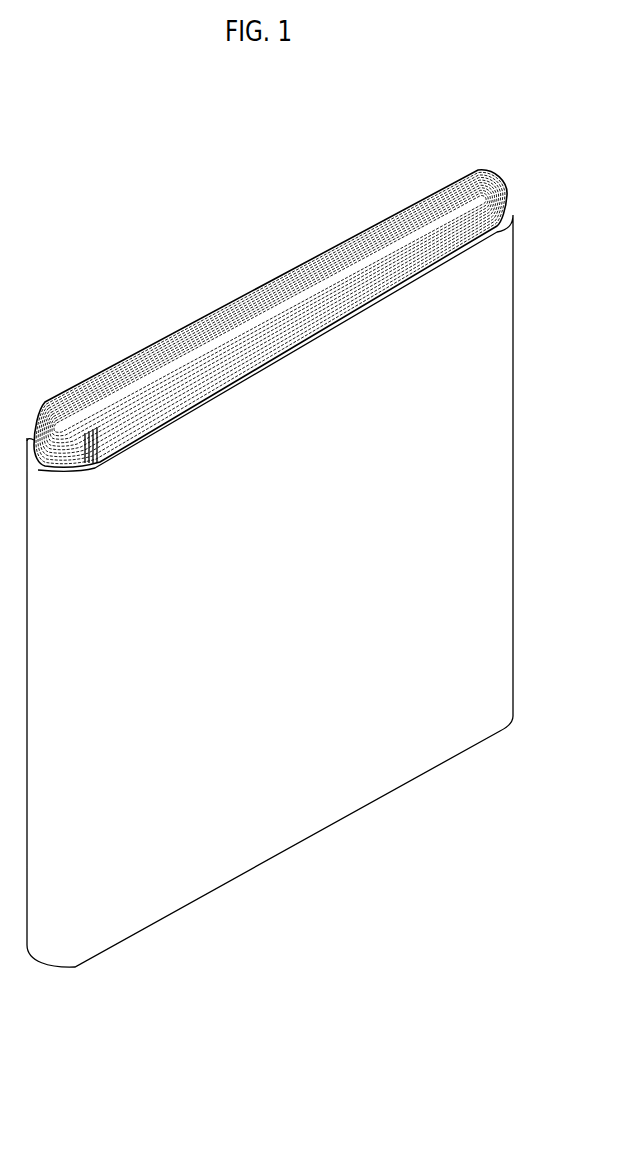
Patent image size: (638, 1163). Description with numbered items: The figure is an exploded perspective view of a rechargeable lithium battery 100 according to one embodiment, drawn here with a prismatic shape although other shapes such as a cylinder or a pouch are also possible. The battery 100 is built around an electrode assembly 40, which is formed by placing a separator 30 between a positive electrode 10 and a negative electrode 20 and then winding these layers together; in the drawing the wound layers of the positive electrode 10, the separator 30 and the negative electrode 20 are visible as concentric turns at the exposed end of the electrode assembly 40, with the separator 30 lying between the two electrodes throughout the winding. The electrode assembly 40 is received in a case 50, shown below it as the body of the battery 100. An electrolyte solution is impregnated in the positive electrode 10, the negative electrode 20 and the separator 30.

The rechargeable lithium battery 100 is at (227, 118).
The positive electrode 10 is at (507, 185).
The negative electrode 20 is at (471, 180).
The separator 30 is at (492, 178).
The electrode assembly 40 is at (292, 287).
The case 50 is at (500, 447).